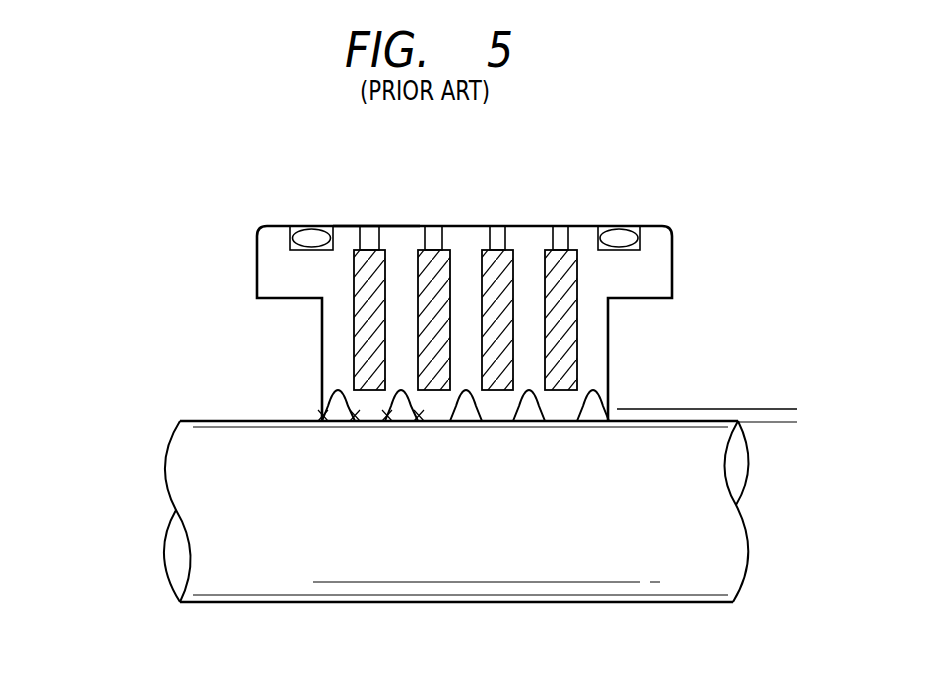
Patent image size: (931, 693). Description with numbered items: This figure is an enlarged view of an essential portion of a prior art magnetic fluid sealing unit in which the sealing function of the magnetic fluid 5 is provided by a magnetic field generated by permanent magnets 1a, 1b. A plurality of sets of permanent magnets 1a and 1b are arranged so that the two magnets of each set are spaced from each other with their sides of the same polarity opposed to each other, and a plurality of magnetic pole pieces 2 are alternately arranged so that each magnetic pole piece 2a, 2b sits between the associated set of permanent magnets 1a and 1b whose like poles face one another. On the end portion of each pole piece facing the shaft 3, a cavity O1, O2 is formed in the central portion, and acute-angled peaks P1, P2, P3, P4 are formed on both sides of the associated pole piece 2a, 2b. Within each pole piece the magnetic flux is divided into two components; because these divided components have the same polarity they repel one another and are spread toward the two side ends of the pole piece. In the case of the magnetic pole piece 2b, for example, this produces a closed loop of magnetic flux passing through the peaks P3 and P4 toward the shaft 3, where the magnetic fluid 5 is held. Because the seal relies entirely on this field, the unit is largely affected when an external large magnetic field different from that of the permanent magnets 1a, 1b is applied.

The magnetic pole pieces 2 is at (267, 258).
The magnetic pole piece 2a is at (345, 226).
The magnetic pole piece 2b is at (393, 226).
The permanent magnet 1a is at (450, 255).
The permanent magnet 1b is at (507, 267).
The magnetic fluid 5 is at (317, 418).
The shaft 3 is at (190, 452).
The cavity O1 is at (336, 391).
The cavity O2 is at (402, 393).
The acute-angled peak P1 is at (323, 421).
The acute-angled peak P2 is at (358, 421).
The acute-angled peak P3 is at (388, 421).
The acute-angled peak P4 is at (413, 421).